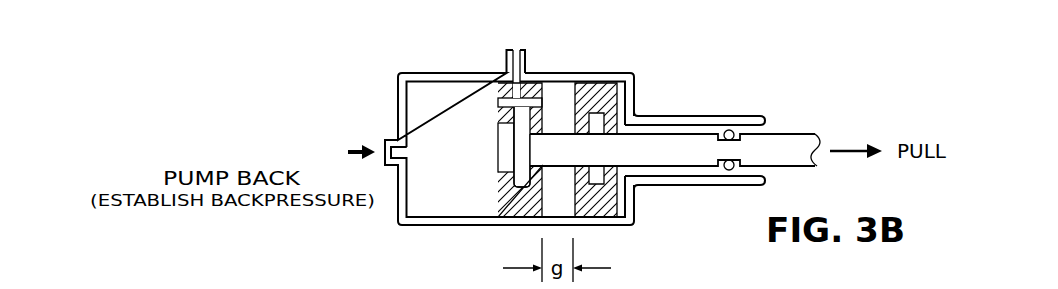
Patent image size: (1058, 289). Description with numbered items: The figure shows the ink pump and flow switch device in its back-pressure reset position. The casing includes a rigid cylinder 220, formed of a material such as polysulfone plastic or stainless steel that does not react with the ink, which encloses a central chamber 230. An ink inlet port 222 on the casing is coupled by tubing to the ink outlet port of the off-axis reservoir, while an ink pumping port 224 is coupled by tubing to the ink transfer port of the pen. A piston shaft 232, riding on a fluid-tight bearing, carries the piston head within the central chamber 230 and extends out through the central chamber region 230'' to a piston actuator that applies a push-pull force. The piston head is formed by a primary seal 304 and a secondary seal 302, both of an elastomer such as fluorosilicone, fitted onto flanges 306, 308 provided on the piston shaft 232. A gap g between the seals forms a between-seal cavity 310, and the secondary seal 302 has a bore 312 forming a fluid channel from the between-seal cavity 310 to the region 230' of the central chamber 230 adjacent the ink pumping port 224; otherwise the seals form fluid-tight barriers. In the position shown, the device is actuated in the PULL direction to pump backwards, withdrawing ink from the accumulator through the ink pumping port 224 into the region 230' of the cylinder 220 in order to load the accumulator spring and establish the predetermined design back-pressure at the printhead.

The cylinder 220 is at (632, 228).
The ink inlet port 222 is at (526, 52).
The ink pumping port 224 is at (386, 148).
The central chamber 230 is at (452, 150).
The region of the central chamber 230' is at (400, 239).
The central chamber region 230'' is at (675, 202).
The piston shaft 232 is at (750, 146).
The secondary seal 302 is at (506, 84).
The primary seal 304 is at (600, 84).
The flange 306 is at (518, 116).
The flange 308 is at (636, 128).
The between-seal cavity 310 is at (558, 208).
The bore 312 is at (517, 98).